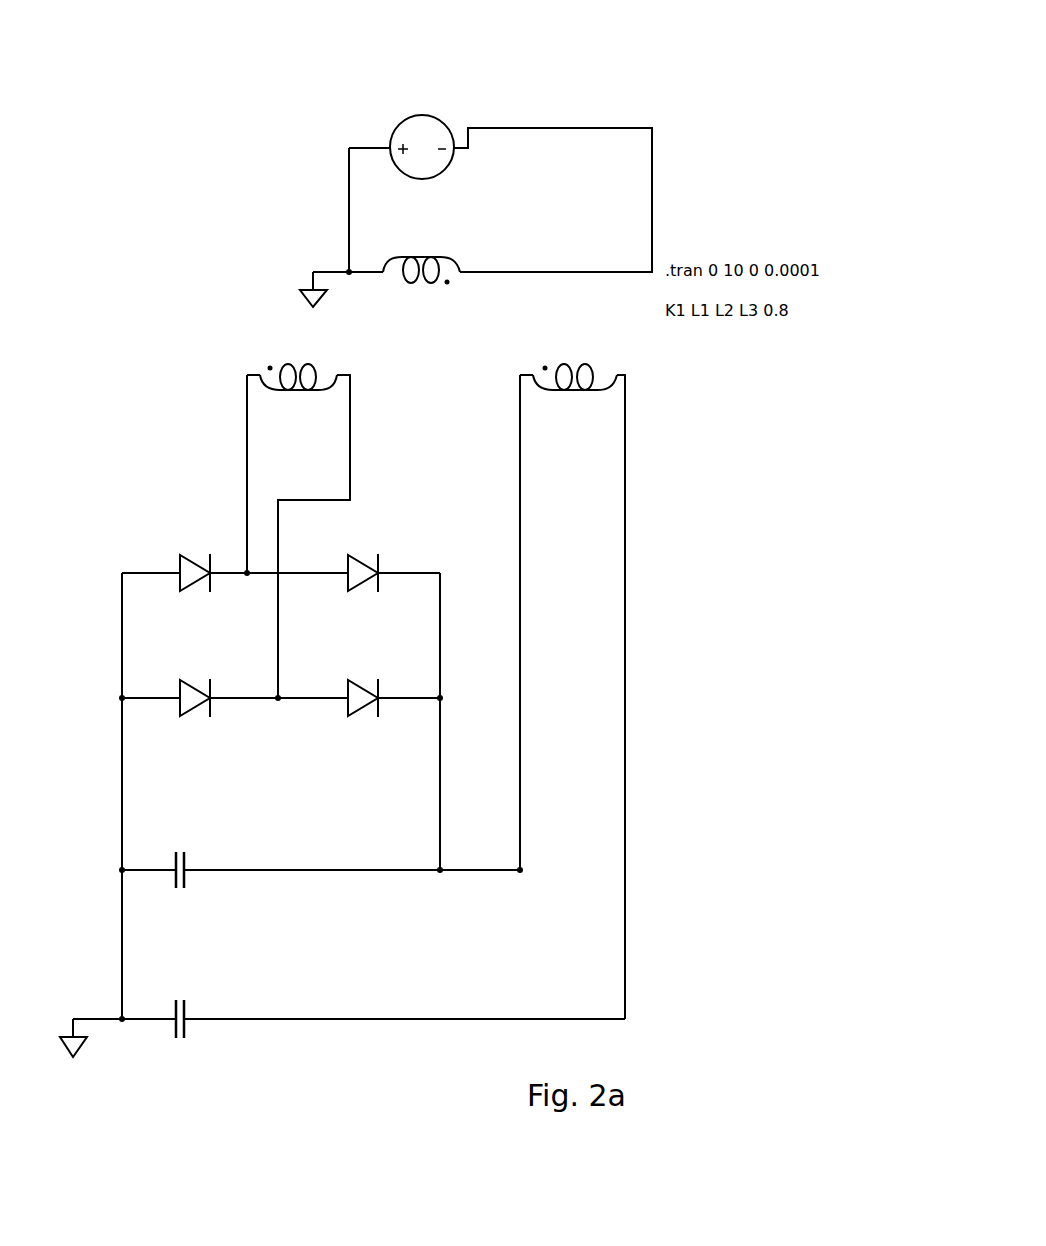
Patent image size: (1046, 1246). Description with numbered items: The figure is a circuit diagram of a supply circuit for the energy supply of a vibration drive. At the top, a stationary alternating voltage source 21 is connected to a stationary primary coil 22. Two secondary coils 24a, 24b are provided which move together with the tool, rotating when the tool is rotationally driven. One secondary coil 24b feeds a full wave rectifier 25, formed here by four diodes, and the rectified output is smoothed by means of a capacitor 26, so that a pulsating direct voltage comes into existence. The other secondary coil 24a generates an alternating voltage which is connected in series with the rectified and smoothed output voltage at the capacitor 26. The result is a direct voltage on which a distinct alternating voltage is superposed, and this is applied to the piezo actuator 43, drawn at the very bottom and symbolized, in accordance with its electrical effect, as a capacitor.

The stationary alternating voltage source 21 is at (512, 96).
The primary coil 22 is at (487, 233).
The secondary coil 24a is at (624, 348).
The secondary coil 24b is at (211, 341).
The full wave rectifier 25 is at (112, 518).
The capacitor 26 is at (203, 832).
The piezo actuator 43 is at (229, 1066).